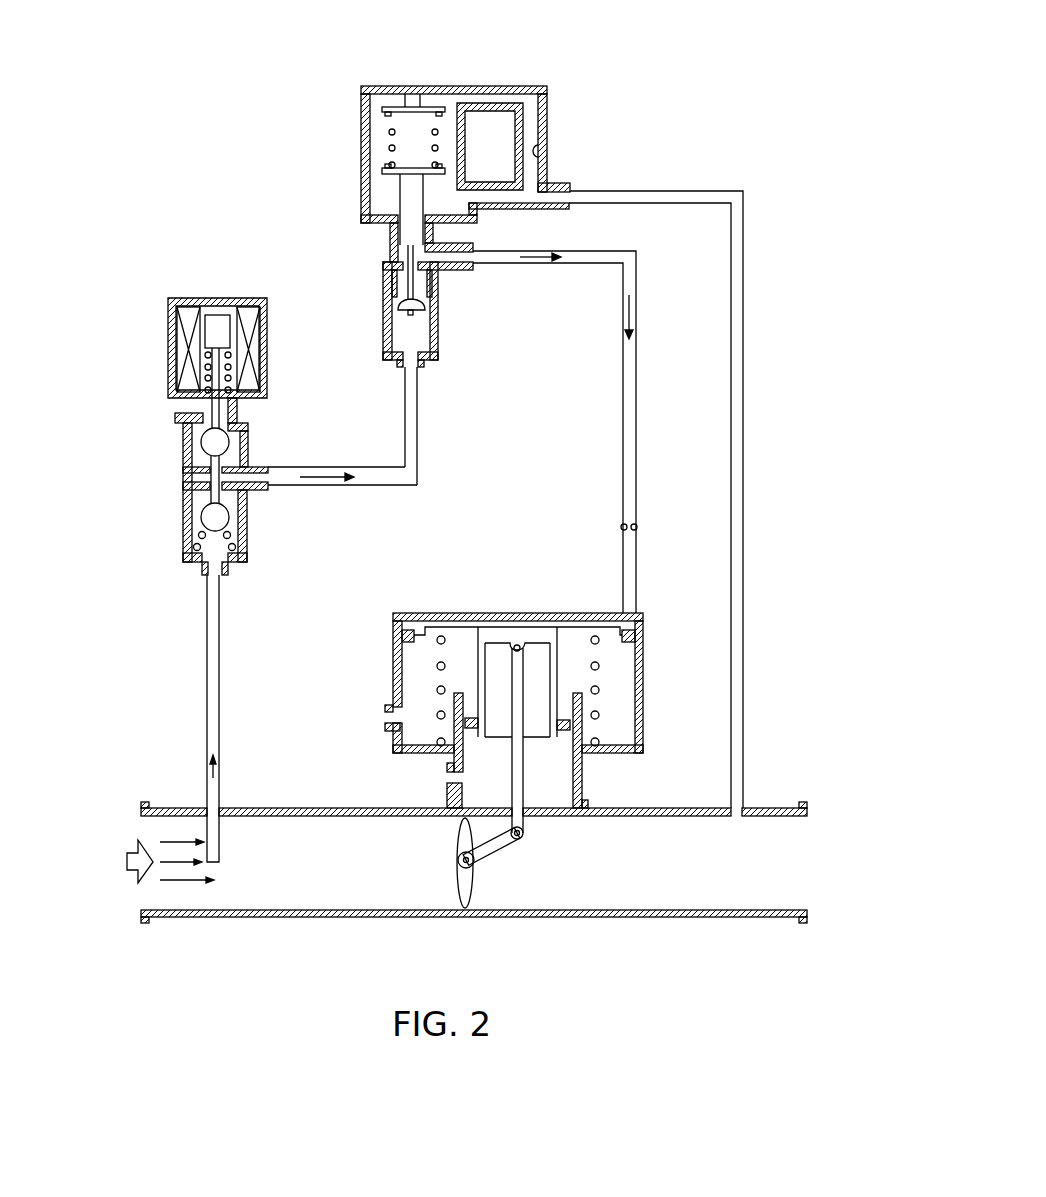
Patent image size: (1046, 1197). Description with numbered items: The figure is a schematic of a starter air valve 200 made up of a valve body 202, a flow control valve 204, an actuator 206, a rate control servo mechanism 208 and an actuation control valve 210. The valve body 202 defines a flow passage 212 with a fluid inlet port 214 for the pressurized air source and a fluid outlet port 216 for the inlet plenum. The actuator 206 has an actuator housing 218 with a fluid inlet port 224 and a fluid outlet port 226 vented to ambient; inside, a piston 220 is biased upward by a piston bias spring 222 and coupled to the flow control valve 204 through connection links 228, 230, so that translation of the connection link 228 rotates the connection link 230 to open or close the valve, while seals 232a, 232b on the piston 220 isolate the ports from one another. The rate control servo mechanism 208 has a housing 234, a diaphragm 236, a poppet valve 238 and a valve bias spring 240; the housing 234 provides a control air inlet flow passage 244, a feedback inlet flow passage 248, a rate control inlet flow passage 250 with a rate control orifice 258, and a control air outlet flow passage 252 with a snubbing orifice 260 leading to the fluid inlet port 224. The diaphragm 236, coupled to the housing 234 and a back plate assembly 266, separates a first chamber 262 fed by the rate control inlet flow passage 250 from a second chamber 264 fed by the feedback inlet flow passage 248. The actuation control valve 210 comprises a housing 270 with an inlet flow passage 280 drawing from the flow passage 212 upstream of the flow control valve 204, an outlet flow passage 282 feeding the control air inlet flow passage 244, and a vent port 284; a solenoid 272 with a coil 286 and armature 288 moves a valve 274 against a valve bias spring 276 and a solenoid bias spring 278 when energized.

The starter air valve 200 is at (733, 145).
The valve body 202 is at (402, 918).
The flow control valve 204 is at (486, 892).
The actuator 206 is at (518, 606).
The rate control servo mechanism 208 is at (428, 78).
The actuation control valve 210 is at (150, 314).
The flow passage 212 is at (395, 874).
The fluid inlet port 214 is at (152, 906).
The fluid outlet port 216 is at (806, 882).
The actuator housing 218 is at (416, 613).
The piston 220 is at (554, 642).
The piston bias spring 222 is at (602, 690).
The fluid inlet port 224 is at (634, 602).
The fluid outlet port 226 is at (388, 722).
The connection link 228 is at (520, 798).
The connection link 230 is at (524, 834).
The seal 232a is at (632, 632).
The seal 232b is at (572, 730).
The housing 234 is at (548, 88).
The diaphragm 236 is at (380, 166).
The poppet valve 238 is at (418, 312).
The valve bias spring 240 is at (390, 130).
The control air inlet flow passage 244 is at (412, 366).
The feedback inlet flow passage 248 is at (566, 193).
The rate control inlet flow passage 250 is at (538, 178).
The control air outlet flow passage 252 is at (480, 258).
The rate control orifice 258 is at (536, 152).
The snubbing orifice 260 is at (636, 528).
The first chamber 262 is at (388, 98).
The second chamber 264 is at (372, 196).
The back plate assembly 266 is at (448, 158).
The housing 270 is at (200, 298).
The solenoid 272 is at (262, 348).
The valve 274 is at (196, 514).
The valve bias spring 276 is at (236, 528).
The solenoid bias spring 278 is at (262, 406).
The inlet flow passage 280 is at (216, 570).
The outlet flow passage 282 is at (306, 458).
The vent port 284 is at (172, 418).
The coil 286 is at (258, 396).
The armature 288 is at (226, 315).